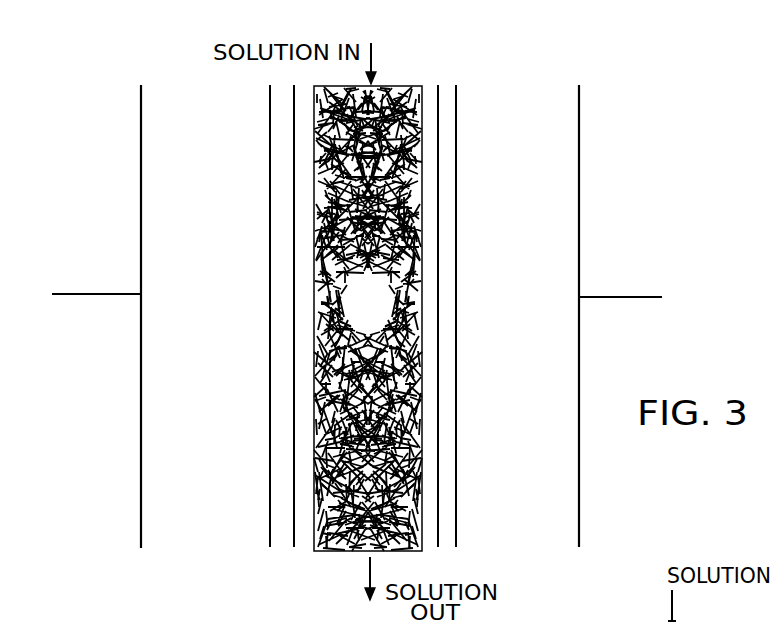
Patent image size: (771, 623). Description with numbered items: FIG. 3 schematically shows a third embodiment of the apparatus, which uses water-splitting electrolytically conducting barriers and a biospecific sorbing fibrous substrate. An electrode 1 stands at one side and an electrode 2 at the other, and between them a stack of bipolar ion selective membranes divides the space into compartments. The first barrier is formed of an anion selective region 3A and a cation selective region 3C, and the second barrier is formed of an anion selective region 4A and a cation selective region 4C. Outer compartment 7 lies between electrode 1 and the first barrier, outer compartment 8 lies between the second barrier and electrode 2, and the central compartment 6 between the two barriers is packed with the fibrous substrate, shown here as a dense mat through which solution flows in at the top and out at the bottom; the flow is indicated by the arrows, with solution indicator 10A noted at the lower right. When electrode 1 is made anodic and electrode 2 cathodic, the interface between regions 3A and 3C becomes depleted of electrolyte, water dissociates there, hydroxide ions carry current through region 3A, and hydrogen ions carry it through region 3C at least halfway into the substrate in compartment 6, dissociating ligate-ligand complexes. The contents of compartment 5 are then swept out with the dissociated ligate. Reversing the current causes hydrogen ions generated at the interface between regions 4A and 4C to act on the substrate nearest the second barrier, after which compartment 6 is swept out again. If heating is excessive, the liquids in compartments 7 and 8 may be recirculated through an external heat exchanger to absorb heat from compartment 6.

The electrode 1 is at (134, 510).
The electrode 2 is at (582, 519).
The anion selective region 3A is at (282, 546).
The cation selective region 3C is at (303, 545).
The anion selective region 4A is at (448, 537).
The cation selective region 4C is at (430, 482).
The compartment 5 is at (397, 85).
The compartment 6 is at (364, 305).
The compartment 7 is at (214, 304).
The compartment 8 is at (509, 307).
The solution flow indicator 10A is at (709, 606).